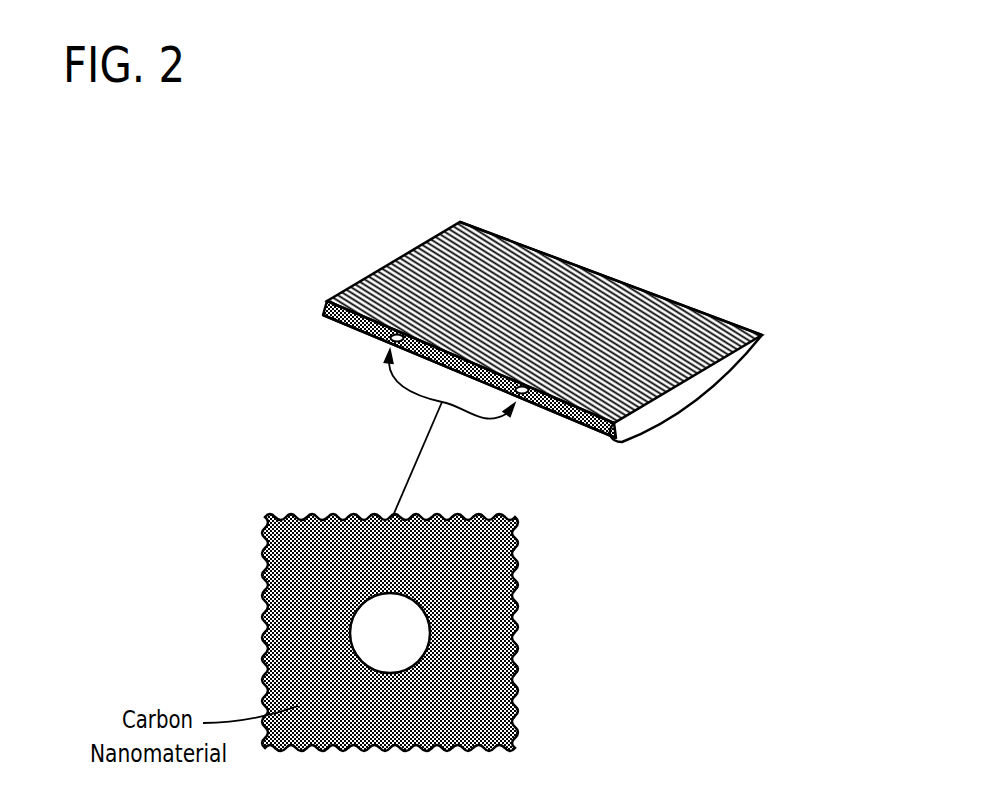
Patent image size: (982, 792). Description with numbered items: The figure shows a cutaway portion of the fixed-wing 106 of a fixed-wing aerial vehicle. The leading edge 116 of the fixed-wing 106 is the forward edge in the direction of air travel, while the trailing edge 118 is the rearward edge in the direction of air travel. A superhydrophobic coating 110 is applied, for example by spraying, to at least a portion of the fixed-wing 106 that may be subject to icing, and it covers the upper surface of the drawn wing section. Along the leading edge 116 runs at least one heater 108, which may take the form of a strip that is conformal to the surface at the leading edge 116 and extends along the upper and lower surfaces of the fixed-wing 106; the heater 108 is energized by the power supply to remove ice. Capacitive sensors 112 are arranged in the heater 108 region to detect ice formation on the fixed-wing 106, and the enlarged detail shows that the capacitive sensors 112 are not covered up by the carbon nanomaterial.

The fixed-wing 106 is at (504, 322).
The heater 108 is at (325, 305).
The superhydrophobic coating 110 is at (453, 290).
The capacitive sensor 112 is at (372, 627).
The leading edge 116 is at (558, 421).
The trailing edge 118 is at (753, 270).